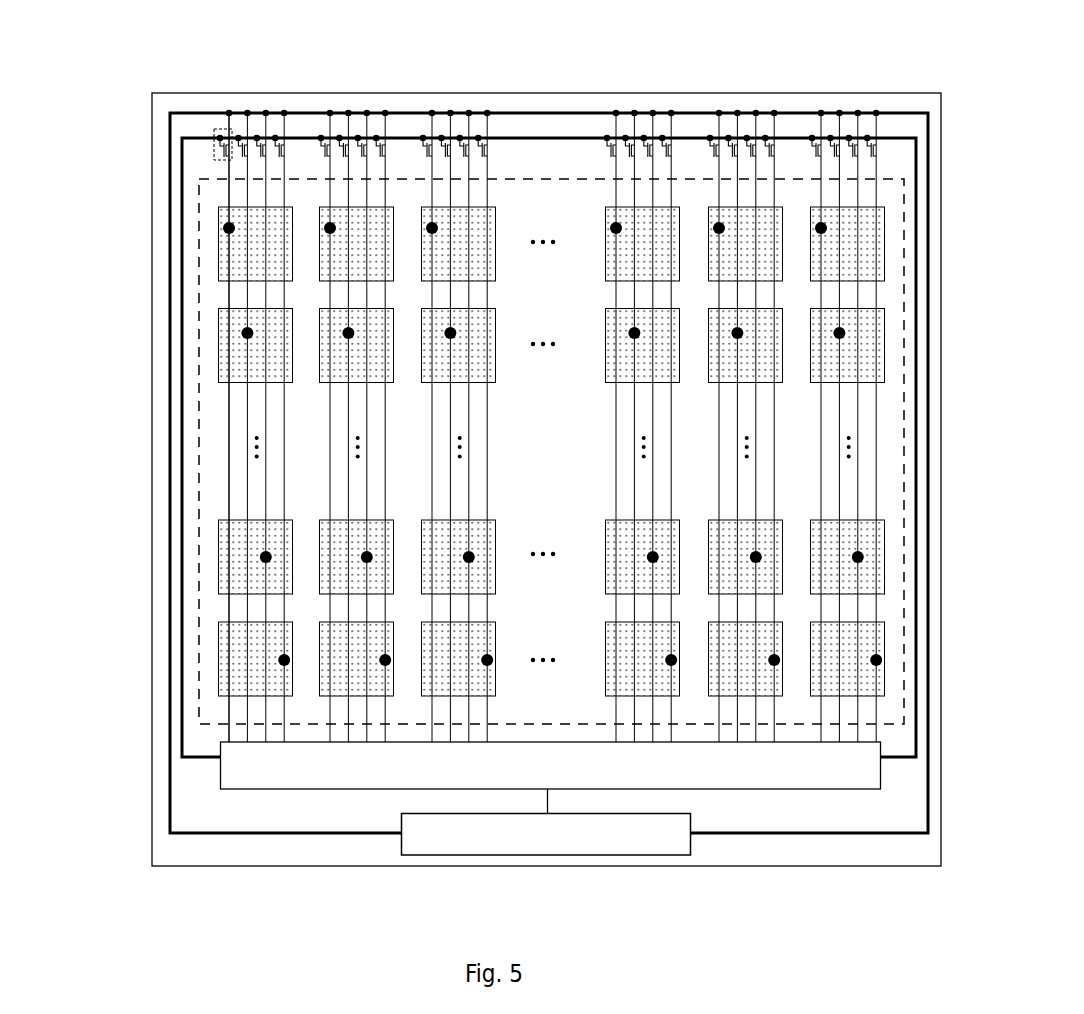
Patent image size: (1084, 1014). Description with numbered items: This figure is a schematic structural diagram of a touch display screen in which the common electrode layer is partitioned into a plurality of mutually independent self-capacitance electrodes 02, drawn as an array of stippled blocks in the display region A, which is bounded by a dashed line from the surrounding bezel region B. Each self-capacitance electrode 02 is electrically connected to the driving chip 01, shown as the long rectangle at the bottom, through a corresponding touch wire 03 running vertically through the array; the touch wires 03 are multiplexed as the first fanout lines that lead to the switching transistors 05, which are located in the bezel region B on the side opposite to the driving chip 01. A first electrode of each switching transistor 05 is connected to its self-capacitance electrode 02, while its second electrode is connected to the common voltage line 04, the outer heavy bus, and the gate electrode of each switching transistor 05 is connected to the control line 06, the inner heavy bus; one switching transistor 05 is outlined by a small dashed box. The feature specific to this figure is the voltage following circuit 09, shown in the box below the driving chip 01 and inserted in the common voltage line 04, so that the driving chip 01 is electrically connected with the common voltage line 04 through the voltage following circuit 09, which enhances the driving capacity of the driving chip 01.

The driving chip 01 is at (802, 789).
The self-capacitance electrode 02 is at (217, 260).
The touch wire 03 is at (143, 427).
The common voltage line 04 is at (178, 106).
The switching transistor 05 is at (213, 150).
The control line 06 is at (207, 128).
The voltage following circuit 09 is at (557, 855).
The display region A is at (510, 187).
The bezel region B is at (555, 155).